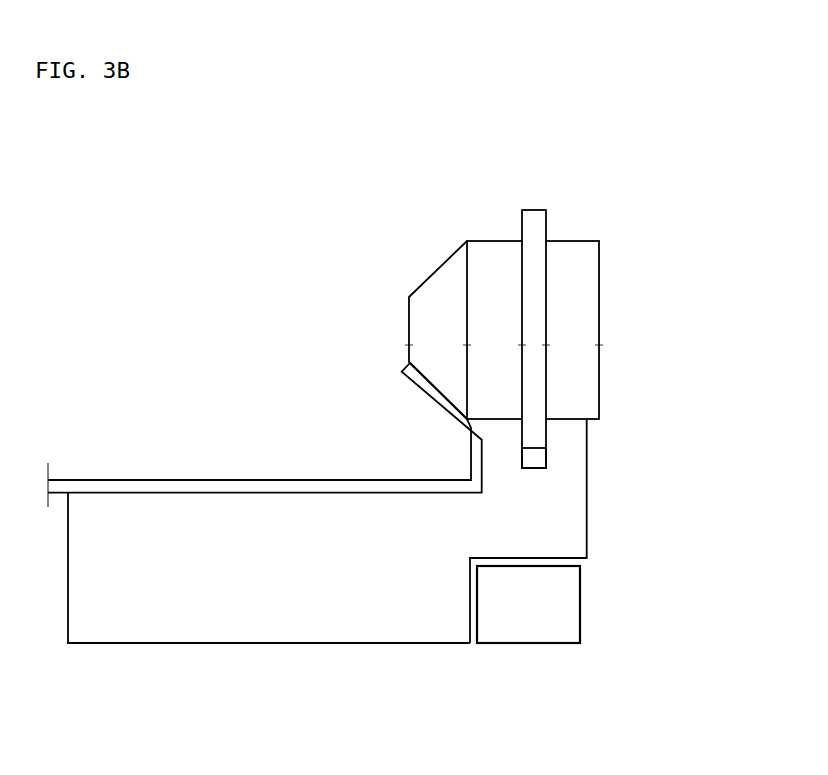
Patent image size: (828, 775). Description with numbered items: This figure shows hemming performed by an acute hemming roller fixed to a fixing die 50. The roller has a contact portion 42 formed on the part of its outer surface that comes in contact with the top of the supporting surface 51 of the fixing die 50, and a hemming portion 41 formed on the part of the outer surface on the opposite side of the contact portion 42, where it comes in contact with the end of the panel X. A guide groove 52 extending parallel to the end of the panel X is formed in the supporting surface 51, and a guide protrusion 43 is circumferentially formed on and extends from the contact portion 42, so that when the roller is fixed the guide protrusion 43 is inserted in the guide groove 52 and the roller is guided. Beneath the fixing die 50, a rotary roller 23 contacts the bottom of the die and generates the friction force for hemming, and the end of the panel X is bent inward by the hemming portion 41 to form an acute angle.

The panel X is at (195, 483).
The rotary roller 23 is at (567, 605).
The hemming portion 41 is at (435, 270).
The contact portion 42 is at (585, 248).
The guide protrusion 43 is at (533, 213).
The fixing die 50 is at (293, 620).
The supporting surface 51 is at (567, 520).
The guide groove 52 is at (533, 460).